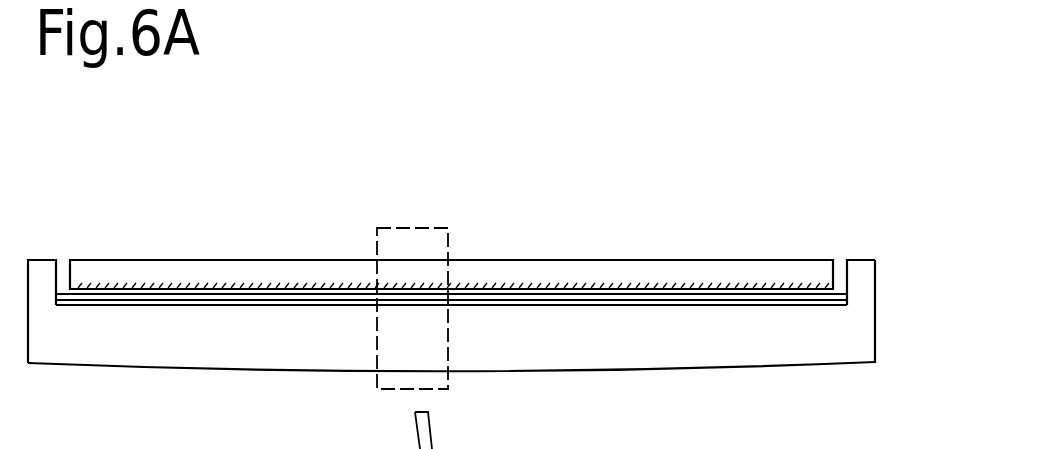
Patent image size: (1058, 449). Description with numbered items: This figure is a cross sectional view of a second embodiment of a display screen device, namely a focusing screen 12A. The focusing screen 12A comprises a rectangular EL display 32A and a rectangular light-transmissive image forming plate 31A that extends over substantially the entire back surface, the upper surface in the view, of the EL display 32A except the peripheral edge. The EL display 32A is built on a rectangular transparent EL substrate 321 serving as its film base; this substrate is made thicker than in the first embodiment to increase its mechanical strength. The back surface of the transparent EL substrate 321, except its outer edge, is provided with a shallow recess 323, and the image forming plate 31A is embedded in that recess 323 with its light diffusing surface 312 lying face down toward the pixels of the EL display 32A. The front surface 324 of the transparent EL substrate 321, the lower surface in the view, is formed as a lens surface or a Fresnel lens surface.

The focusing screen 12A is at (508, 235).
The image forming plate 31A is at (647, 262).
The light diffusing surface 312 is at (133, 285).
The recess 323 is at (840, 273).
The front surface 324 is at (535, 371).
The EL display 32A is at (702, 350).
The transparent EL substrate 321 is at (847, 350).